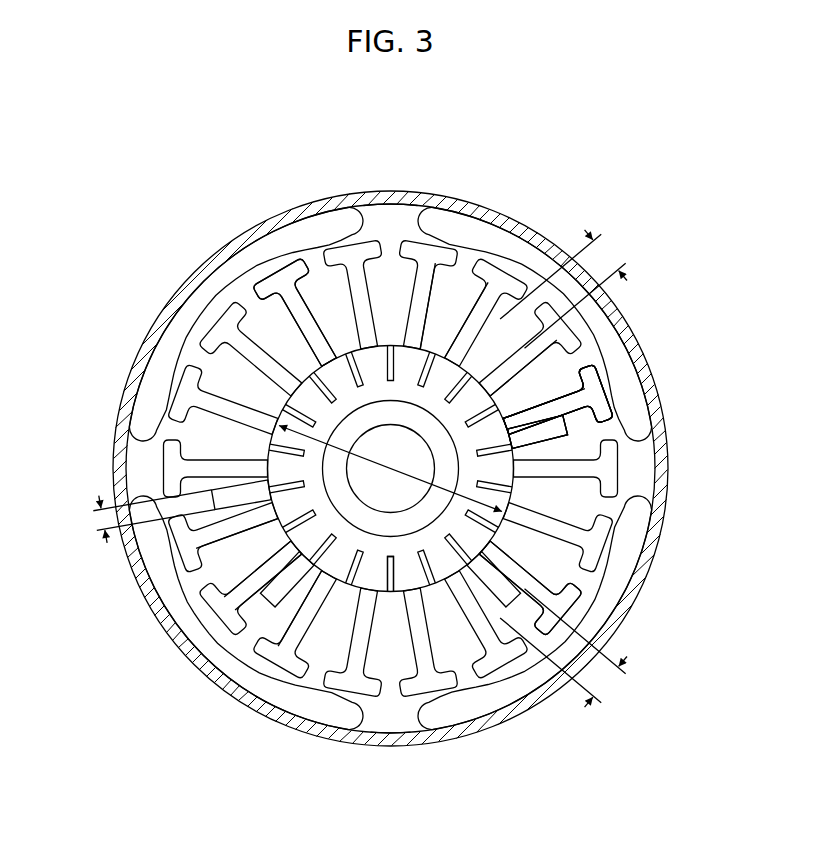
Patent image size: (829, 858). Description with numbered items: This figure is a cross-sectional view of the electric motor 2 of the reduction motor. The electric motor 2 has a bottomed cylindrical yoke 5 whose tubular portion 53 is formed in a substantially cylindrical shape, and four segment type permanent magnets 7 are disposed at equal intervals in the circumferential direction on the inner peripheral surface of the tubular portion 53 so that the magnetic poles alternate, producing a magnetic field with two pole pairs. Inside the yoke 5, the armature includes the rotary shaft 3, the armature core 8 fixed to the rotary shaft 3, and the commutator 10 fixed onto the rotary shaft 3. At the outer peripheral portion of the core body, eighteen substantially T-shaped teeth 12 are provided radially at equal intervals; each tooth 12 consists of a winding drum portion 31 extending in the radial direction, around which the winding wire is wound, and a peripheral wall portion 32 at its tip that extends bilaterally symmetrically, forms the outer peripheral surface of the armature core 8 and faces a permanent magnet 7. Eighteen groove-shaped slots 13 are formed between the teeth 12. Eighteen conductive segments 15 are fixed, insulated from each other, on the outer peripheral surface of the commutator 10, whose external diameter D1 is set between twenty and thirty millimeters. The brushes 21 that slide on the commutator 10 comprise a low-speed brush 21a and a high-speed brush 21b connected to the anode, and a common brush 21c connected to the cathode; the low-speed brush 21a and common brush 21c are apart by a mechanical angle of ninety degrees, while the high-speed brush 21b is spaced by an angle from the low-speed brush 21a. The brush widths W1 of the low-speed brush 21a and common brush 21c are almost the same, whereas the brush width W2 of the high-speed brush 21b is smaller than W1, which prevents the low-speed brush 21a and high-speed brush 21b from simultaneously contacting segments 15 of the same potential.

The electric motor 2 is at (590, 198).
The rotary shaft 3 is at (377, 425).
The yoke 5 is at (434, 189).
The permanent magnet 7 is at (318, 228).
The armature core 8 is at (354, 236).
The commutator 10 is at (387, 604).
The tooth 12 is at (733, 370).
The slot 13 is at (465, 265).
The segment 15 is at (305, 365).
The brush 21 is at (372, 512).
The low-speed brush 21a is at (593, 392).
The high-speed brush 21b is at (565, 462).
The common brush 21c is at (516, 596).
The winding drum portion 31 is at (560, 440).
The peripheral wall portion 32 is at (602, 394).
The tubular portion 53 is at (362, 736).
The external diameter D1 is at (390, 469).
The brush width W1 is at (564, 469).
The brush width W2 is at (136, 518).